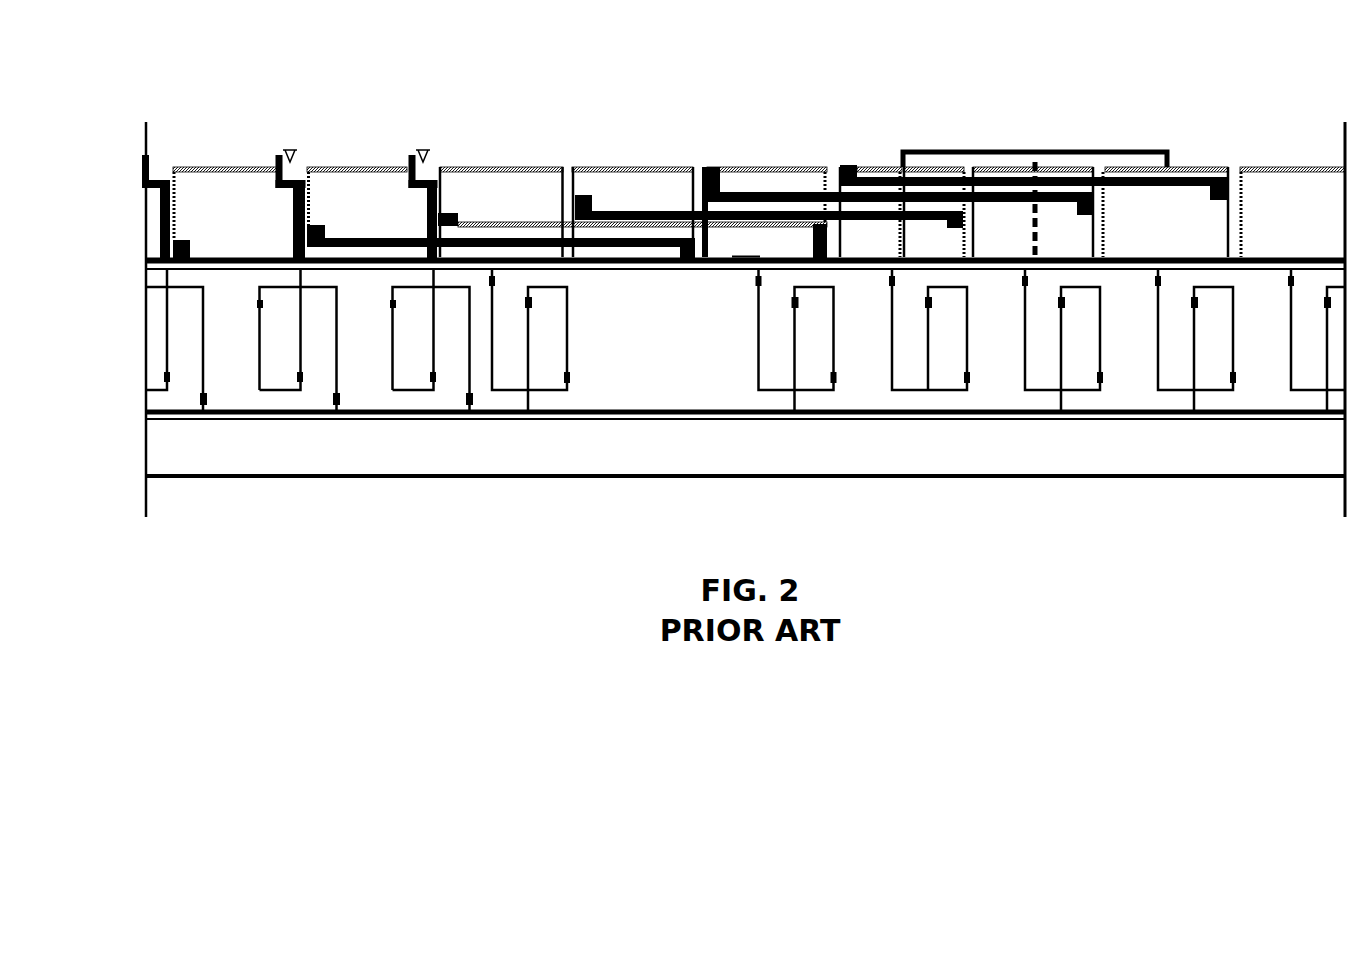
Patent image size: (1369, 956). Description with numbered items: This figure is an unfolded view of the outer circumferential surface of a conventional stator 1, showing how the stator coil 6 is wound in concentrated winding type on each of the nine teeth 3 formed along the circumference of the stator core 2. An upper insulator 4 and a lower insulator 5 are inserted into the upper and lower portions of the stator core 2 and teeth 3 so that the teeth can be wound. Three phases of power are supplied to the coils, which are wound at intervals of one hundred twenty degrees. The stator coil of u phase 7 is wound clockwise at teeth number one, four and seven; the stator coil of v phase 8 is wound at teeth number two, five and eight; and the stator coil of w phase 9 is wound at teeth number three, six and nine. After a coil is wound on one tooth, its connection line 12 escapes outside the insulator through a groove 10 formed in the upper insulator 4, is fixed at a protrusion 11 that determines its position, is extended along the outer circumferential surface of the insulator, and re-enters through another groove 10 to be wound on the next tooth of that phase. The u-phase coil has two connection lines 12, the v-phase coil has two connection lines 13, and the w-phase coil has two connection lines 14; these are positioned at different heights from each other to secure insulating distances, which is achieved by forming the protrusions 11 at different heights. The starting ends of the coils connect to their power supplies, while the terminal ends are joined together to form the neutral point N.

The stator 1 is at (146, 155).
The stator core 2 is at (280, 507).
The teeth 3 is at (412, 507).
The upper insulator 4 is at (546, 507).
The lower insulator 5 is at (160, 449).
The stator coil 6 is at (812, 507).
The stator coil of u phase 7 is at (946, 507).
The stator coil of v phase 8 is at (1079, 507).
The stator coil of w phase 9 is at (1212, 507).
The groove 10 is at (566, 173).
The protrusion 11 is at (716, 137).
The connection line 12 is at (235, 257).
The connection line 13 is at (355, 237).
The connection line 14 is at (483, 223).
The neutral point N is at (1034, 143).